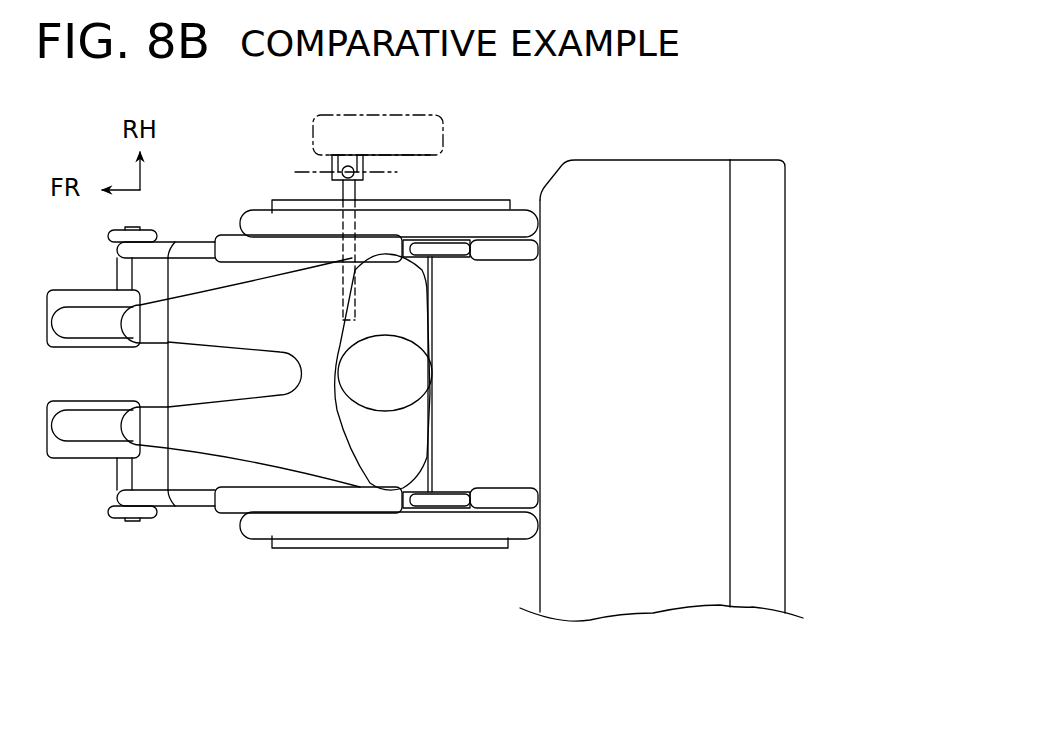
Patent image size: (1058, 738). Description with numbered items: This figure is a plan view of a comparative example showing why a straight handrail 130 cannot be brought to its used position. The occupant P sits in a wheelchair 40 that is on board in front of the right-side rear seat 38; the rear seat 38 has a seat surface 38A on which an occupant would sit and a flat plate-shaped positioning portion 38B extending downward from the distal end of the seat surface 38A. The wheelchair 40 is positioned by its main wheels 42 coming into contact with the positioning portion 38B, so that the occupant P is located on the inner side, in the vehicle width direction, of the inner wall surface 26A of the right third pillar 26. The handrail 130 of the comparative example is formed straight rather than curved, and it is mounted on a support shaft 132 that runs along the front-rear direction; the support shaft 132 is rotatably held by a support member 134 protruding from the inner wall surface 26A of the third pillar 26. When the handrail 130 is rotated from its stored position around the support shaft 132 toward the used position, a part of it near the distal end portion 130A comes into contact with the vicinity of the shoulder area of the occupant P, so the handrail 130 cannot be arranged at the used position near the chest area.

The third pillar 26 is at (448, 122).
The inner wall surface 26A is at (413, 155).
The rear seat 38 is at (656, 286).
The seat surface 38A is at (683, 193).
The positioning portion 38B is at (565, 360).
The wheelchair 40 is at (436, 440).
The main wheels 42 is at (538, 218).
The handrail 130 is at (332, 177).
The distal end portion 130A is at (290, 357).
The support shaft 132 is at (350, 158).
The support member 134 is at (338, 156).
The occupant P is at (398, 355).